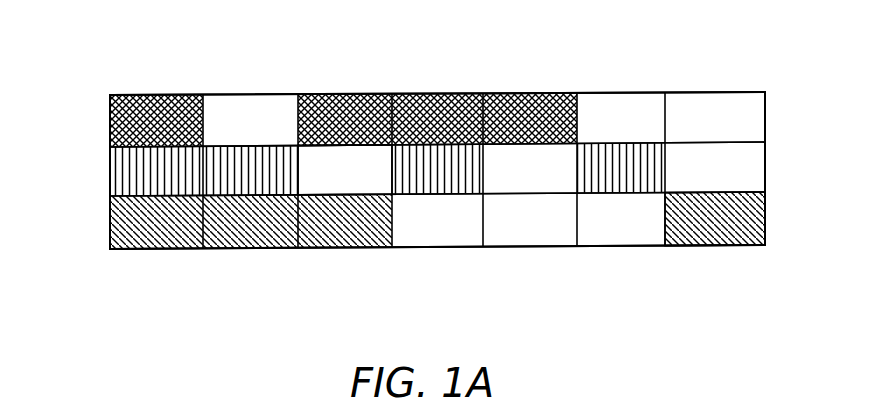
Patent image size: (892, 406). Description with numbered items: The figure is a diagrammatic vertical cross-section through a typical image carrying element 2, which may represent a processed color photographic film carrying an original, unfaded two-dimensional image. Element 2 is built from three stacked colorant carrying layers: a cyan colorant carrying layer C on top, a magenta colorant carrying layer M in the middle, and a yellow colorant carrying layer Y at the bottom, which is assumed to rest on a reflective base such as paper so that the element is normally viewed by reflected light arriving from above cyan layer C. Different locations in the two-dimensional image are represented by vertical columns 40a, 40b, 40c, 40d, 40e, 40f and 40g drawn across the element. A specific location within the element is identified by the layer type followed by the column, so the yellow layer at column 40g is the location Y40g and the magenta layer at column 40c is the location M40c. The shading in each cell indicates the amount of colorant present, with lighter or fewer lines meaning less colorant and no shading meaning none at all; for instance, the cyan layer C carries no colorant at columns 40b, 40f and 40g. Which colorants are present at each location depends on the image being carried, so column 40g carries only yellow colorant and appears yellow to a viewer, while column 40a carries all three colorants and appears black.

The image carrying element 2 is at (83, 158).
The column 40a is at (152, 94).
The column 40b is at (260, 93).
The column 40c is at (358, 93).
The column 40d is at (458, 93).
The column 40e is at (538, 93).
The column 40f is at (632, 93).
The column 40g is at (728, 92).
The cyan colorant carrying layer C is at (793, 116).
The magenta colorant carrying layer M is at (793, 170).
The yellow colorant carrying layer Y is at (793, 225).
The magenta layer location at column 40c M40c is at (351, 180).
The yellow layer location at column 40g Y40g is at (703, 232).